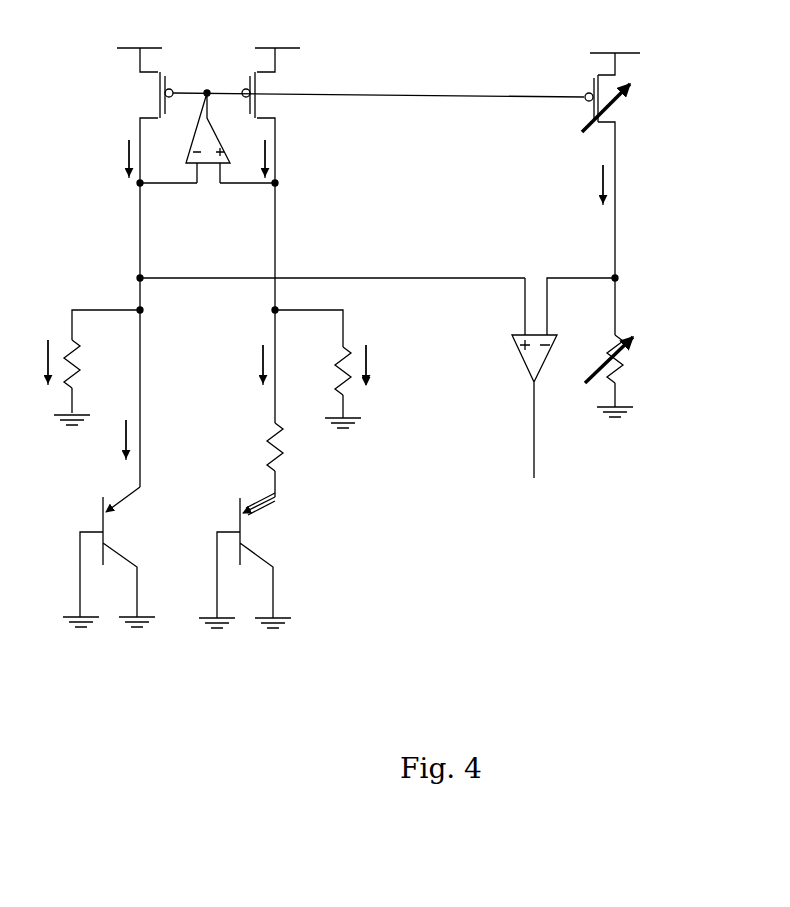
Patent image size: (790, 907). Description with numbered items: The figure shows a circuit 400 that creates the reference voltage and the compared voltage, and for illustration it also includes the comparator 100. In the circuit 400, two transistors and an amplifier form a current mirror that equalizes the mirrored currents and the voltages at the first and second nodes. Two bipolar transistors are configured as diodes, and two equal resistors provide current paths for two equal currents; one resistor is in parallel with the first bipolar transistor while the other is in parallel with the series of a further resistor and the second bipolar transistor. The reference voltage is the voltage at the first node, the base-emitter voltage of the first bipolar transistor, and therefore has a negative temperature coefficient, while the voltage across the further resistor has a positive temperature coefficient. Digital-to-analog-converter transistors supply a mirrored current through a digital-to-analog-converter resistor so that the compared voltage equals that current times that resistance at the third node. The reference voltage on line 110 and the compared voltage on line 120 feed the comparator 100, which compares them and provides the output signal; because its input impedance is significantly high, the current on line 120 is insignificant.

The comparator 100 is at (528, 370).
The line 110 is at (522, 308).
The line 120 is at (547, 328).
The circuit 400 is at (371, 356).